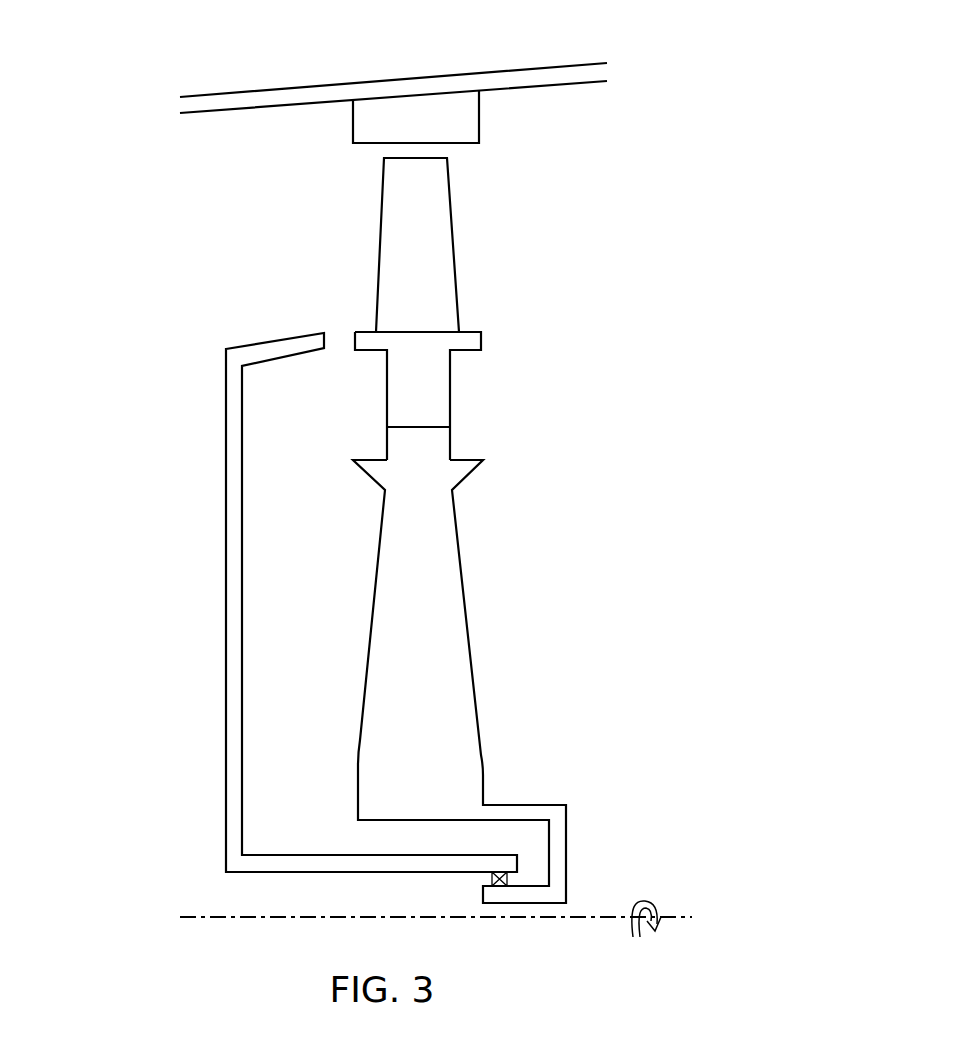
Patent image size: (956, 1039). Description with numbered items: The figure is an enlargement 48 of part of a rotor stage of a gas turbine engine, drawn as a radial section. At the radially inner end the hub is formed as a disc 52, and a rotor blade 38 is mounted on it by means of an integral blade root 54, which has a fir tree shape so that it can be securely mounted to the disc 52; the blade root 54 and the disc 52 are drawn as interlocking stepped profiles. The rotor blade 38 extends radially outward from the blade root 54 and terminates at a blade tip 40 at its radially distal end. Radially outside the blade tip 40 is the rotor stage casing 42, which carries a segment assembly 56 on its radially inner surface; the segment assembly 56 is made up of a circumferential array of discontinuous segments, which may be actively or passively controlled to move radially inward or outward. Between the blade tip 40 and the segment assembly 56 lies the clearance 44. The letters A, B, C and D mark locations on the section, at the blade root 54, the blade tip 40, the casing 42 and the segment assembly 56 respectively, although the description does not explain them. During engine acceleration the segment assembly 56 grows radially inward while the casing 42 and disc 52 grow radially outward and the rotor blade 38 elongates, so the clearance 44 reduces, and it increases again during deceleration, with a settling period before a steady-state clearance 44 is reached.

The rotor blade 38 is at (397, 255).
The blade tip 40 is at (395, 183).
The rotor stage casing 42 is at (547, 74).
The clearance 44 is at (367, 155).
The enlargement 48 is at (145, 202).
The disc 52 is at (452, 583).
The blade root 54 is at (433, 377).
The segment assembly 56 is at (467, 115).
The location A is at (421, 435).
The location B is at (423, 163).
The location C is at (413, 92).
The location D is at (417, 133).